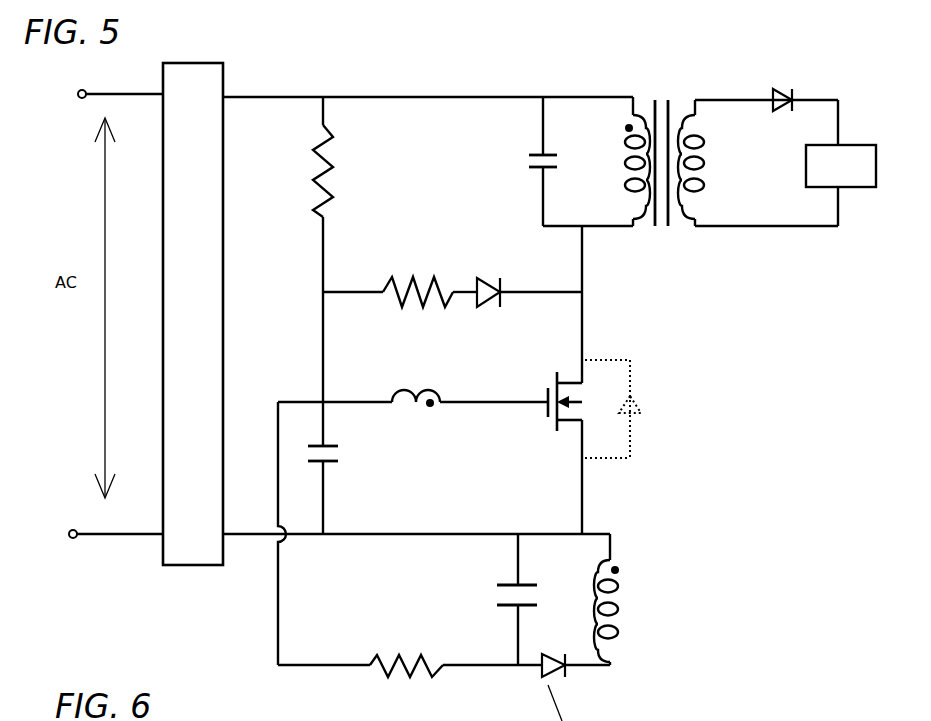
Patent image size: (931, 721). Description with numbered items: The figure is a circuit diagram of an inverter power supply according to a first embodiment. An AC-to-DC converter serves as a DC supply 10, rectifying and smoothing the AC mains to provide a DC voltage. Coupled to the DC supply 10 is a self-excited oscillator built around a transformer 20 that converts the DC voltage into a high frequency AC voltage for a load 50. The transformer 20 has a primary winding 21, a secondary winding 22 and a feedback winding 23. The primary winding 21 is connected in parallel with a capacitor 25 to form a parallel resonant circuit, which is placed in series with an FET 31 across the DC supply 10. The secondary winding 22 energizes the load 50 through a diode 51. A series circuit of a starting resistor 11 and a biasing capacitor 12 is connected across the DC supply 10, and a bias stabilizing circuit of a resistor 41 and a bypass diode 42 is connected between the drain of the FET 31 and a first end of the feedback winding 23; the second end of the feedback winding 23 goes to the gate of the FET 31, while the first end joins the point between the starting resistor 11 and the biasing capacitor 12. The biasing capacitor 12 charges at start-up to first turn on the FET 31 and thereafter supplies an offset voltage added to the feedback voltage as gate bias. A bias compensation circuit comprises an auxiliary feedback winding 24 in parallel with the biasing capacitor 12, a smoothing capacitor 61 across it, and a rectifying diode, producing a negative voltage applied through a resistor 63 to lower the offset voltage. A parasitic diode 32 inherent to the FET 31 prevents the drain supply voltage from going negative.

The DC supply 10 is at (213, 50).
The starting resistor 11 is at (300, 166).
The biasing capacitor 12 is at (347, 460).
The transformer 20 is at (655, 93).
The primary winding 21 is at (612, 156).
The secondary winding 22 is at (712, 158).
The feedback winding 23 is at (449, 377).
The auxiliary feedback winding 24 is at (625, 602).
The capacitor 25 is at (520, 142).
The FET 31 is at (547, 420).
The parasitic diode 32 is at (645, 398).
The resistor 41 is at (400, 260).
The bypass diode 42 is at (493, 275).
The load 50 is at (845, 138).
The diode 51 is at (767, 92).
The smoothing capacitor 61 is at (492, 590).
The resistor 63 is at (413, 653).